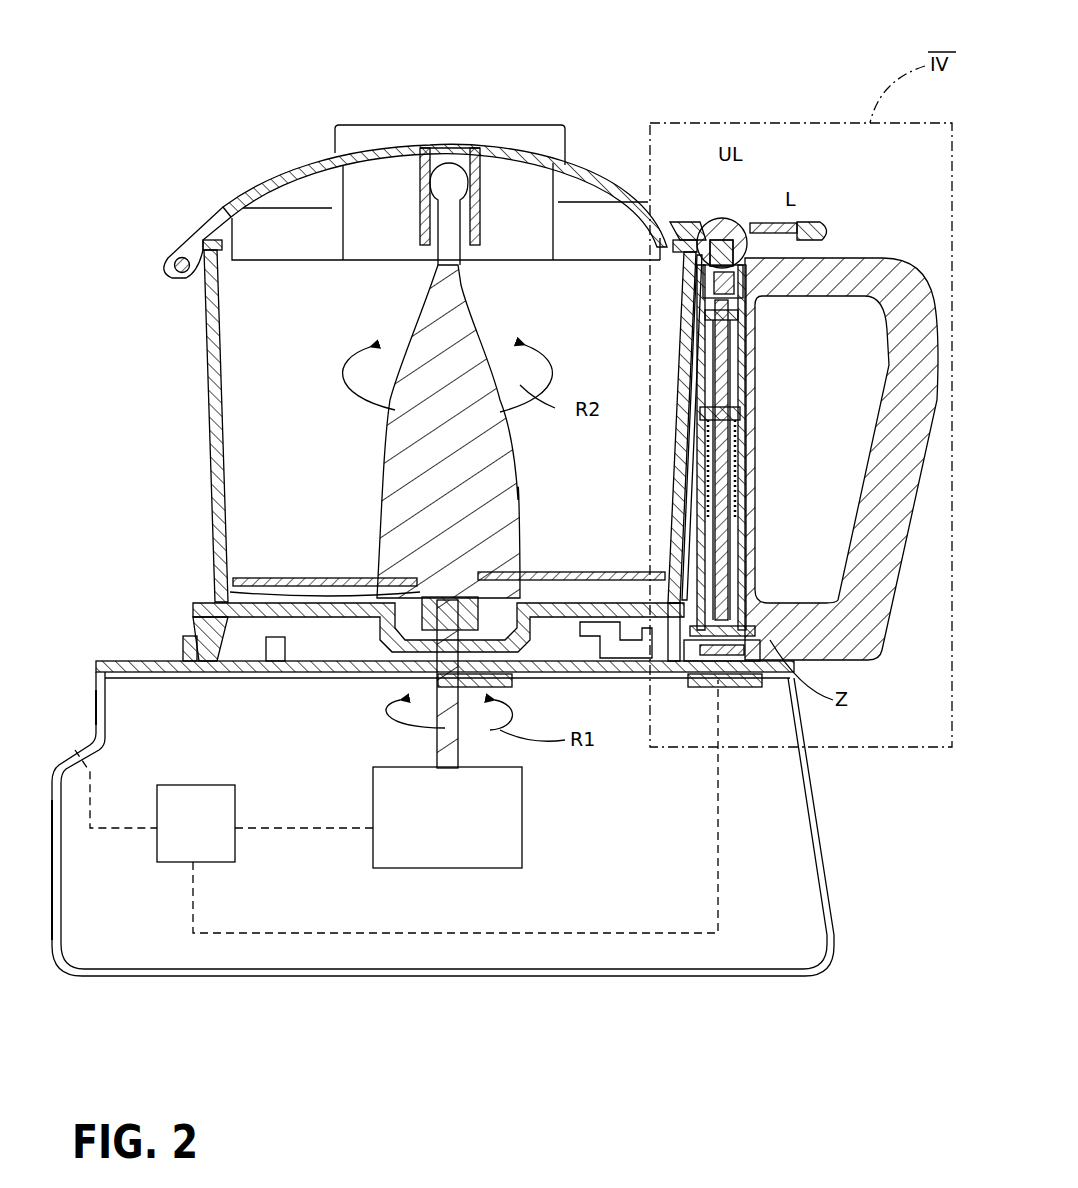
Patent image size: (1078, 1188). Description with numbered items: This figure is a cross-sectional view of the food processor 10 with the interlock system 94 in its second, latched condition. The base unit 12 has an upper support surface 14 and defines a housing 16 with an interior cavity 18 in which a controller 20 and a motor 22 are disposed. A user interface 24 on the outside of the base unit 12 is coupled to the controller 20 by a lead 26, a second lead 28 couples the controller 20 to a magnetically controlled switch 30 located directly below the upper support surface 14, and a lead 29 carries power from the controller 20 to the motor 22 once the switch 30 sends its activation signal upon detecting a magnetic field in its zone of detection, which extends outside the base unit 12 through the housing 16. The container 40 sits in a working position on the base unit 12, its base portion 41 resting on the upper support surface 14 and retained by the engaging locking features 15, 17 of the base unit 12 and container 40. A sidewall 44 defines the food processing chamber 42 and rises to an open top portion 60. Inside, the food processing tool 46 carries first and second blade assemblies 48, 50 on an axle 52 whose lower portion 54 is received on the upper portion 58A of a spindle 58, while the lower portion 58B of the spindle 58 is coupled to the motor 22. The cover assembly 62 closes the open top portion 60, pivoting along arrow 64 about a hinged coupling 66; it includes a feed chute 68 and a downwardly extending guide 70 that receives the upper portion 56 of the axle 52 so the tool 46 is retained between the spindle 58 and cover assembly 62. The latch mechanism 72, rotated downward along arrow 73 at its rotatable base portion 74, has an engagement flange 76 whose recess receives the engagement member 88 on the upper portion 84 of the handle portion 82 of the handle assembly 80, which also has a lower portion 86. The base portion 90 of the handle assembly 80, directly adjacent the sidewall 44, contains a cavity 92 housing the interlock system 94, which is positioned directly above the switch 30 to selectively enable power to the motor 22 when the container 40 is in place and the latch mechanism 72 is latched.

The food processor 10 is at (215, 115).
The base unit 12 is at (100, 645).
The upper support surface 14 is at (230, 643).
The locking feature 15 is at (580, 690).
The housing 16 is at (80, 652).
The locking feature 17 is at (622, 650).
The interior cavity 18 is at (140, 867).
The controller 20 is at (173, 865).
The motor 22 is at (510, 866).
The user interface 24 is at (52, 950).
The lead 26 is at (107, 830).
The second lead 28 is at (682, 935).
The lead 29 is at (297, 836).
The switch 30 is at (735, 688).
The container 40 is at (200, 355).
The base portion 41 is at (180, 650).
The food processing chamber 42 is at (300, 405).
The sidewall 44 is at (210, 460).
The food processing tool 46 is at (395, 352).
The first blade assembly 48 is at (385, 574).
The second blade assembly 50 is at (612, 570).
The axle 52 is at (420, 460).
The lower portion 54 is at (400, 594).
The upper portion 56 is at (430, 205).
The spindle 58 is at (445, 700).
The upper portion 58A is at (545, 575).
The lower portion 58B is at (545, 765).
The open top portion 60 is at (190, 270).
The cover assembly 62 is at (320, 145).
The arrow 64 is at (638, 125).
The hinged coupling 66 is at (185, 235).
The feed chute 68 is at (382, 125).
The guide 70 is at (480, 185).
The latch mechanism 72 is at (715, 180).
The arrow 73 is at (800, 190).
The rotatable base portion 74 is at (705, 245).
The engagement flange 76 is at (815, 230).
The handle assembly 80 is at (880, 205).
The handle portion 82 is at (910, 330).
The upper portion 84 is at (848, 256).
The lower portion 86 is at (820, 665).
The engagement member 88 is at (805, 225).
The base portion 90 is at (768, 400).
The cavity 92 is at (747, 500).
The interlock system 94 is at (757, 453).